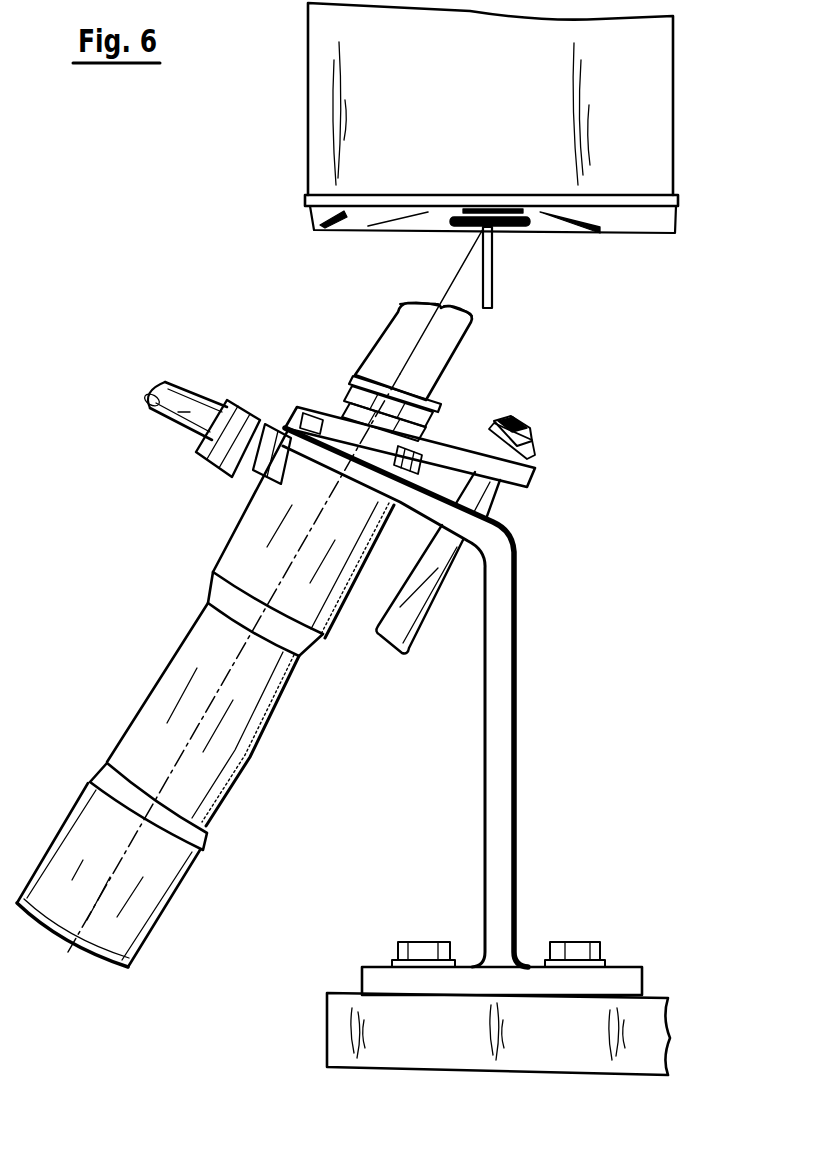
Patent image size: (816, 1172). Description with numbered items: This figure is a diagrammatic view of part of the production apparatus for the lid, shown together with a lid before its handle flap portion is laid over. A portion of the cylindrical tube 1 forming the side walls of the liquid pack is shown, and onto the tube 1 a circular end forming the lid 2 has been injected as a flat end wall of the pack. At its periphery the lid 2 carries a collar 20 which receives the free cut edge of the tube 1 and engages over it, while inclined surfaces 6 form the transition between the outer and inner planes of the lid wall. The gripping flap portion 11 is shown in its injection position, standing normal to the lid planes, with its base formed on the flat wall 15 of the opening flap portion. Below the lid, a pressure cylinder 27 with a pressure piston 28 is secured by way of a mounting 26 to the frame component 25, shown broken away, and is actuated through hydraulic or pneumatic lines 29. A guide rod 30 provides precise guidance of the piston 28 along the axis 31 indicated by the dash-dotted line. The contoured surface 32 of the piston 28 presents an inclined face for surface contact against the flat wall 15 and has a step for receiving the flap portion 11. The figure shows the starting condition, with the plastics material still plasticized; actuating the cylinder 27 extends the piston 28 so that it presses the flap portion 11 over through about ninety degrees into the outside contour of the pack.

The cylindrical tube 1 is at (495, 100).
The collar 20 is at (305, 198).
The lid 2 is at (314, 229).
The inclined surfaces 6 is at (426, 213).
The flat wall 15 is at (520, 227).
The gripping flap portion 11 is at (546, 274).
The contoured surface 32 is at (399, 295).
The pressure piston 28 is at (407, 343).
The hydraulic or pneumatic lines 29 is at (176, 433).
The axis 31 is at (230, 653).
The pressure cylinder 27 is at (213, 757).
The guide rod 30 is at (400, 648).
The mounting 26 is at (500, 806).
The frame component 25 is at (372, 1023).